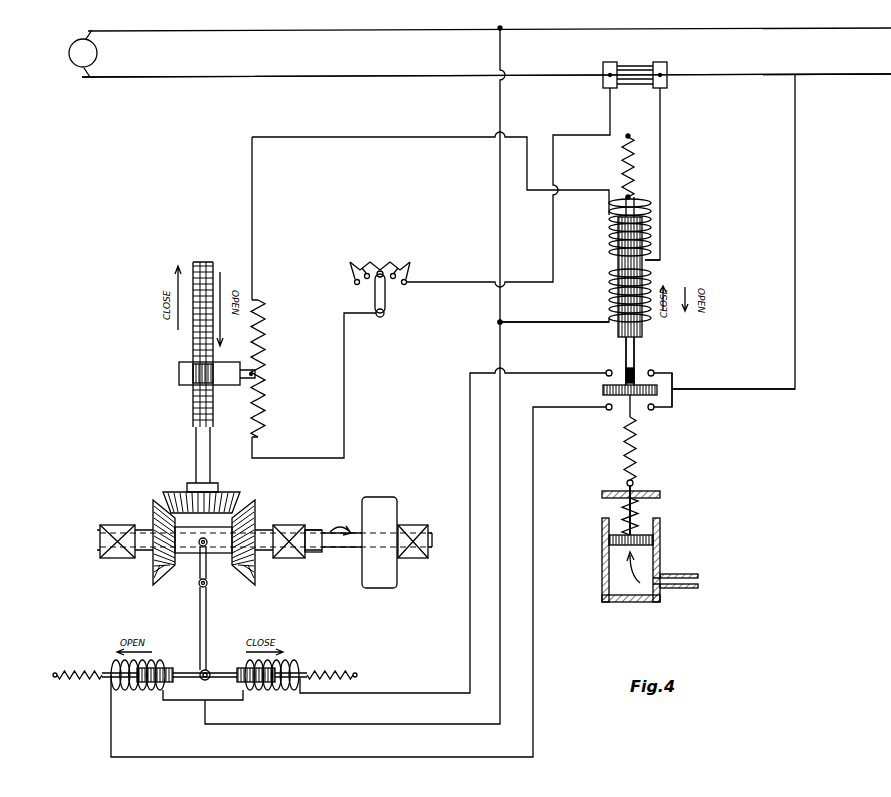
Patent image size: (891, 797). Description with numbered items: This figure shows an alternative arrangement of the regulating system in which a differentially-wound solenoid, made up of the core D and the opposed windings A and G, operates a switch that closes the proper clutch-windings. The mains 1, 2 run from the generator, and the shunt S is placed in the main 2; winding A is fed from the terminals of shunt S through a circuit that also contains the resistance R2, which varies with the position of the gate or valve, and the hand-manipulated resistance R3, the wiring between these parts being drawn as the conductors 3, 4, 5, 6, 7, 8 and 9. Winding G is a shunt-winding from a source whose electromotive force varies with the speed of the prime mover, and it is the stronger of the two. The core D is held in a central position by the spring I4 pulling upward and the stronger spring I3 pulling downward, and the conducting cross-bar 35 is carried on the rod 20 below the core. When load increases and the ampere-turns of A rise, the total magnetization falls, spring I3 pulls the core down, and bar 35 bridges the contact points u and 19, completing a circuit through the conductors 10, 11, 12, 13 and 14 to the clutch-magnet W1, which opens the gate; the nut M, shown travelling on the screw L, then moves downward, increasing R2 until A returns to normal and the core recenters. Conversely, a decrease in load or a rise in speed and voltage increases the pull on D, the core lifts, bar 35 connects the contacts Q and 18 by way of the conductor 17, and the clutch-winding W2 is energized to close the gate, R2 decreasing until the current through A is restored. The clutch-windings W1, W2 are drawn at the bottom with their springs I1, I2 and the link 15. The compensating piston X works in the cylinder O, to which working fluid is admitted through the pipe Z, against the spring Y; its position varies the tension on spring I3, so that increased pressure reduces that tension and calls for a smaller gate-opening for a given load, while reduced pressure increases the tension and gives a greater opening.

The main 1 is at (480, 41).
The main 2 is at (486, 64).
The conductor 3 is at (668, 164).
The conductor 4 is at (580, 190).
The conductor 5 is at (346, 348).
The conductor 6 is at (608, 106).
The conductor 7 is at (497, 102).
The conductor 8 is at (663, 262).
The conductor 9 is at (797, 150).
The conductor 10 is at (542, 373).
The conductor 11 is at (534, 462).
The conductor 12 is at (508, 322).
The conductor 13 is at (520, 323).
The conductor 14 is at (498, 357).
The link and pivot connection 15 is at (204, 702).
The conductor 17 is at (674, 389).
The contact 18 is at (656, 370).
The contact point 19 is at (654, 410).
The plunger rod 20 is at (636, 350).
The conducting cross-bar 35 is at (602, 390).
The shunt S is at (635, 64).
The spring I4 is at (614, 166).
The winding A is at (608, 229).
The core D is at (618, 262).
The shunt-winding G is at (608, 294).
The contact Q is at (607, 370).
The contact point u is at (607, 410).
The spring I3 is at (636, 452).
The spring Y is at (640, 512).
The compensating spring-opposed piston X is at (660, 545).
The cylinder O is at (602, 570).
The pipe Z is at (670, 590).
The nut L is at (186, 385).
The nut M is at (248, 366).
The resistance R2 is at (276, 368).
The hand-manipulated resistance R3 is at (380, 276).
The spring I1 is at (77, 663).
The spring I2 is at (332, 663).
The clutch-magnet W1 is at (177, 691).
The clutch-winding W2 is at (268, 691).